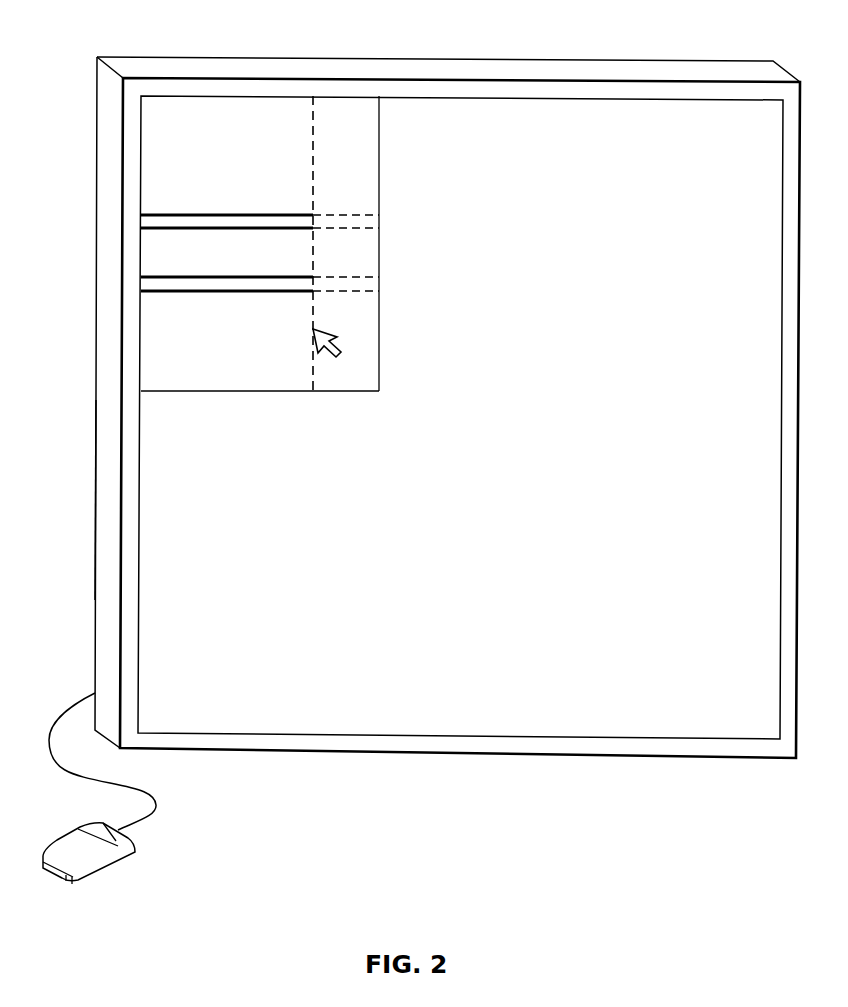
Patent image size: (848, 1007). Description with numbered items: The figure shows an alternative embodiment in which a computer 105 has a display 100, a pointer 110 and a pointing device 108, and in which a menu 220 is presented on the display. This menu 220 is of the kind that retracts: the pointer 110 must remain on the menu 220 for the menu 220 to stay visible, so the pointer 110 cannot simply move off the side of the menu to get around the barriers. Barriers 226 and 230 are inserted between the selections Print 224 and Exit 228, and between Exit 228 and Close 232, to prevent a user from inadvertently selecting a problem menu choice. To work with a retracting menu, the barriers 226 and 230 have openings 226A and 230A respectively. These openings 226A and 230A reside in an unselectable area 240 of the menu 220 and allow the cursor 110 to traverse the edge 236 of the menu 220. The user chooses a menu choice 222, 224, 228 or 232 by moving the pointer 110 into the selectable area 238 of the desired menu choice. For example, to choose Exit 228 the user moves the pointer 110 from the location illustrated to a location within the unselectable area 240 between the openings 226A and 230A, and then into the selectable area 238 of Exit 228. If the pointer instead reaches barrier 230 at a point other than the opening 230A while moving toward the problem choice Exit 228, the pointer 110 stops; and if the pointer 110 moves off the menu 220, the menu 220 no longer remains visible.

The display 100 is at (698, 121).
The computer 105 is at (103, 533).
The pointing device 108 is at (118, 856).
The pointer 110 is at (347, 340).
The menu 220 is at (314, 86).
The menu choice 222 is at (156, 125).
The selection 224 is at (156, 190).
The barrier 226 is at (138, 222).
The opening 226A is at (384, 221).
The menu choice 228 is at (294, 258).
The barrier 230 is at (138, 283).
The opening 230A is at (384, 285).
The menu choice 232 is at (154, 328).
The edge 236 is at (380, 403).
The selectable area 238 is at (216, 403).
The unselectable area 240 is at (331, 403).